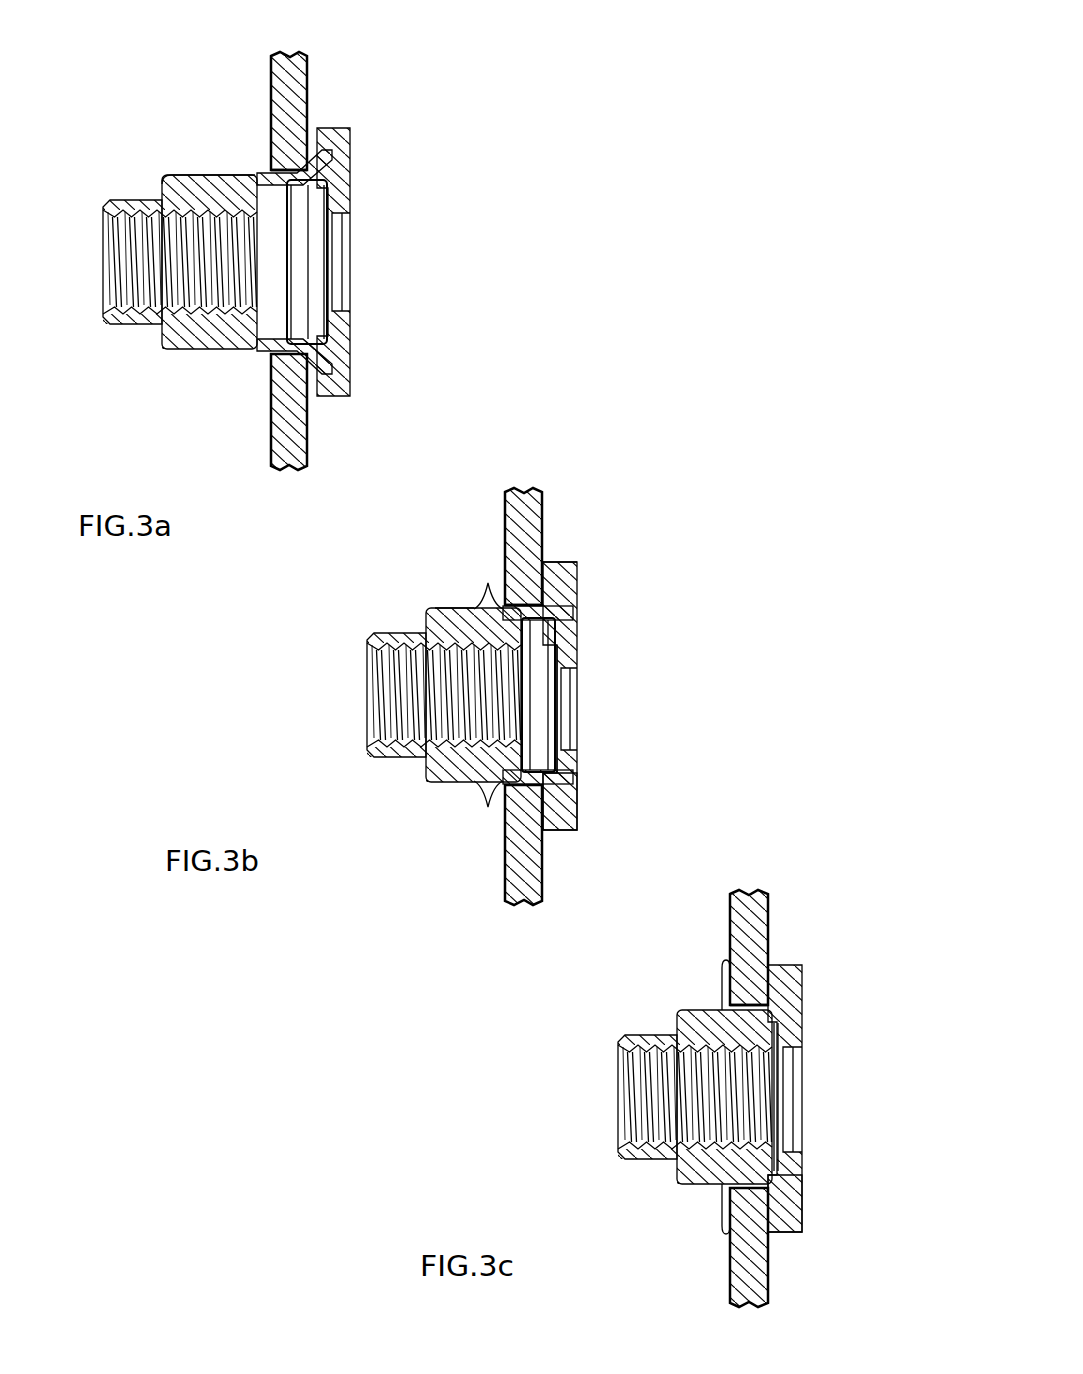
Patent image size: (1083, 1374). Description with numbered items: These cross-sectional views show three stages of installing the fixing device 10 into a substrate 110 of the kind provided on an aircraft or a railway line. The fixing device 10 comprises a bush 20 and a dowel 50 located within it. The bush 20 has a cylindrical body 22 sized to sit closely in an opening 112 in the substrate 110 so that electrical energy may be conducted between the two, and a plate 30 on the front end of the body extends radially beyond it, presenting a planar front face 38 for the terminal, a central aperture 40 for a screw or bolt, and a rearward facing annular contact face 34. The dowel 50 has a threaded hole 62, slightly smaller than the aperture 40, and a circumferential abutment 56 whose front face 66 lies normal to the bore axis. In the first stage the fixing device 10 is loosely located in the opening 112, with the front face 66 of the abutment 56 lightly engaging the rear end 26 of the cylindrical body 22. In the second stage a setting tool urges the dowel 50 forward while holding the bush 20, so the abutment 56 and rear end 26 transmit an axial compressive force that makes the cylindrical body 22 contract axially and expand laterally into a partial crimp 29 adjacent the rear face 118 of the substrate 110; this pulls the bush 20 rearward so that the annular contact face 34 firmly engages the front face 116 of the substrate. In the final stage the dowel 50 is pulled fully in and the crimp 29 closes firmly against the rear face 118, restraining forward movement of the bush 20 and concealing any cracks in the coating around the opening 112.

In FIG. 3A, the fixing device 10 is at (368, 124).
In FIG. 3B, the fixing device 10 is at (643, 543).
In FIG. 3C, the fixing device 10 is at (845, 941).
In FIG. 3B, the bush 20 is at (578, 815).
In FIG. 3C, the bush 20 is at (803, 1226).
In FIG. 3A, the cylindrical body 22 is at (262, 172).
In FIG. 3A, the rear end 26 is at (208, 172).
In FIG. 3B, the rear end 26 is at (470, 606).
In FIG. 3B, the crimp 29 is at (486, 582).
In FIG. 3A, the plate 30 is at (354, 360).
In FIG. 3B, the plate 30 is at (578, 622).
In FIG. 3B, the annular contact face 34 is at (578, 566).
In FIG. 3B, the front face 38 is at (616, 718).
In FIG. 3A, the aperture 40 is at (352, 300).
In FIG. 3B, the aperture 40 is at (633, 709).
In FIG. 3C, the aperture 40 is at (796, 1090).
In FIG. 3A, the dowel 50 is at (101, 318).
In FIG. 3B, the dowel 50 is at (370, 752).
In FIG. 3C, the dowel 50 is at (625, 1153).
In FIG. 3A, the circumferential abutment 56 is at (162, 177).
In FIG. 3B, the circumferential abutment 56 is at (430, 611).
In FIG. 3C, the circumferential abutment 56 is at (680, 1012).
In FIG. 3A, the hole 62 is at (147, 252).
In FIG. 3B, the hole 62 is at (405, 674).
In FIG. 3C, the hole 62 is at (648, 1078).
In FIG. 3A, the front face 66 is at (181, 166).
In FIG. 3A, the substrate 110 is at (290, 408).
In FIG. 3B, the substrate 110 is at (524, 840).
In FIG. 3C, the substrate 110 is at (747, 1257).
In FIG. 3A, the opening 112 is at (310, 158).
In FIG. 3B, the opening 112 is at (535, 600).
In FIG. 3C, the opening 112 is at (752, 1002).
In FIG. 3A, the front face 116 is at (309, 79).
In FIG. 3B, the front face 116 is at (533, 527).
In FIG. 3C, the rear face 118 is at (728, 960).